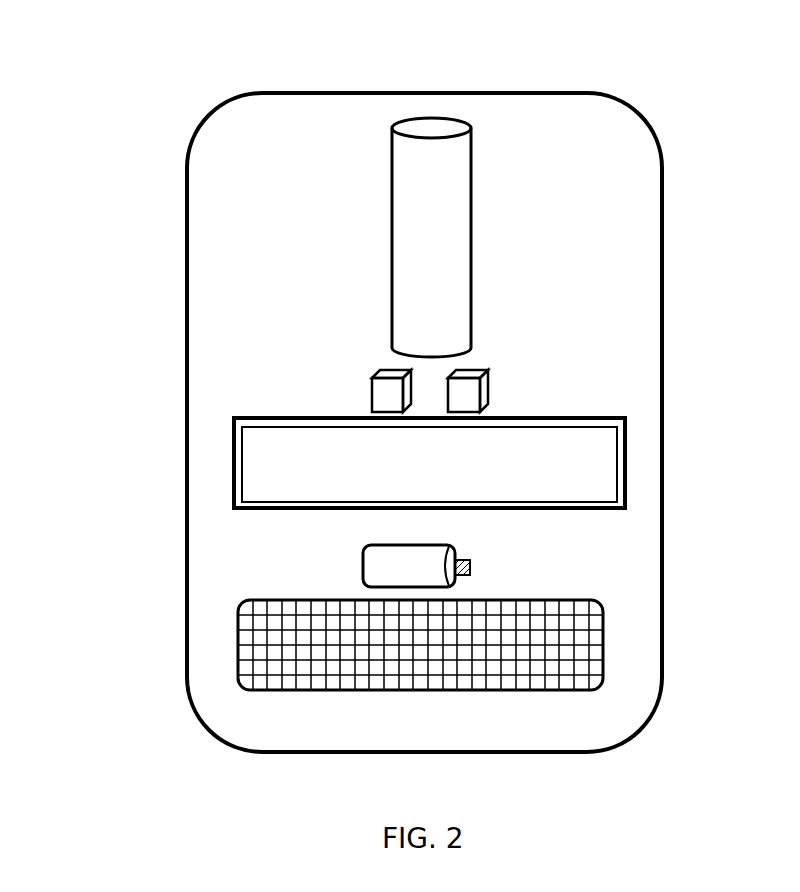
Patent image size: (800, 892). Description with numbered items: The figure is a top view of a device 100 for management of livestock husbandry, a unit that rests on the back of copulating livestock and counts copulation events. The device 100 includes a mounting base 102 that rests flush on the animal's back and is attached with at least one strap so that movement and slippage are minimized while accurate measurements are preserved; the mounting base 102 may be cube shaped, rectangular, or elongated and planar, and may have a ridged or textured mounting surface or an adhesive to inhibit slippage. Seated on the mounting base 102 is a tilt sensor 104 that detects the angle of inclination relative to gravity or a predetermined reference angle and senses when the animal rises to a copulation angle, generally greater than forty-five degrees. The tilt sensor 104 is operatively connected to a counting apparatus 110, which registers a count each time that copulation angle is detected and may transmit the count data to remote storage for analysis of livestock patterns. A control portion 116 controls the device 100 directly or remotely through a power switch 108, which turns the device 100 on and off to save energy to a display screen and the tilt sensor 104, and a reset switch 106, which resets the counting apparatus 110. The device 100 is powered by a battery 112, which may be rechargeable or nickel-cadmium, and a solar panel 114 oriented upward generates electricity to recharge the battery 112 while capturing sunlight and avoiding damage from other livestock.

The device 100 is at (166, 113).
The mounting base 102 is at (658, 140).
The tilt sensor 104 is at (471, 180).
The reset switch 106 is at (372, 372).
The power switch 108 is at (488, 367).
The counting apparatus 110 is at (627, 468).
The battery 112 is at (363, 573).
The solar panel 114 is at (242, 643).
The control portion 116 is at (345, 389).